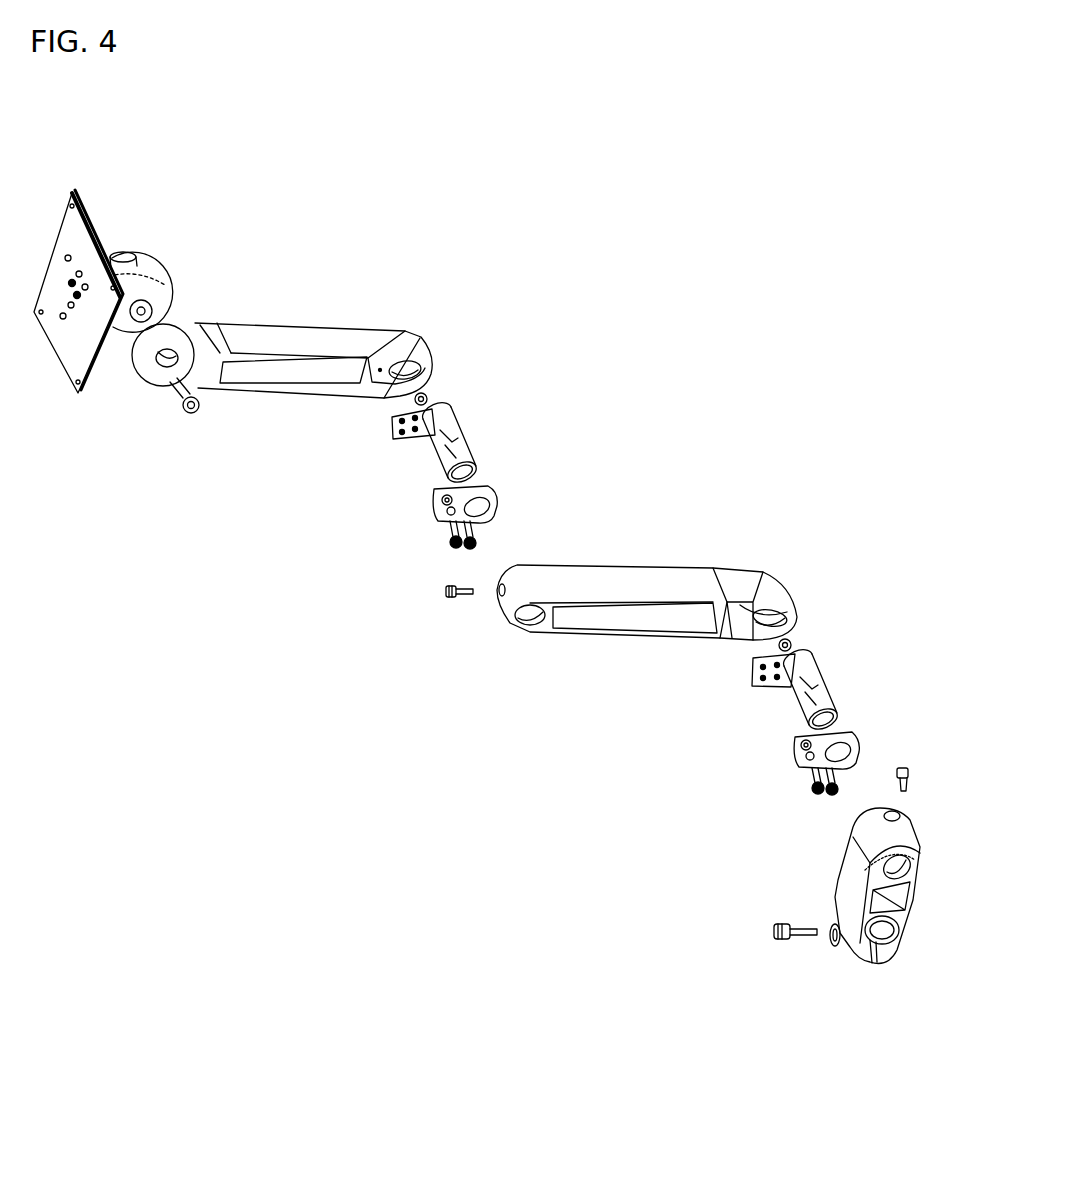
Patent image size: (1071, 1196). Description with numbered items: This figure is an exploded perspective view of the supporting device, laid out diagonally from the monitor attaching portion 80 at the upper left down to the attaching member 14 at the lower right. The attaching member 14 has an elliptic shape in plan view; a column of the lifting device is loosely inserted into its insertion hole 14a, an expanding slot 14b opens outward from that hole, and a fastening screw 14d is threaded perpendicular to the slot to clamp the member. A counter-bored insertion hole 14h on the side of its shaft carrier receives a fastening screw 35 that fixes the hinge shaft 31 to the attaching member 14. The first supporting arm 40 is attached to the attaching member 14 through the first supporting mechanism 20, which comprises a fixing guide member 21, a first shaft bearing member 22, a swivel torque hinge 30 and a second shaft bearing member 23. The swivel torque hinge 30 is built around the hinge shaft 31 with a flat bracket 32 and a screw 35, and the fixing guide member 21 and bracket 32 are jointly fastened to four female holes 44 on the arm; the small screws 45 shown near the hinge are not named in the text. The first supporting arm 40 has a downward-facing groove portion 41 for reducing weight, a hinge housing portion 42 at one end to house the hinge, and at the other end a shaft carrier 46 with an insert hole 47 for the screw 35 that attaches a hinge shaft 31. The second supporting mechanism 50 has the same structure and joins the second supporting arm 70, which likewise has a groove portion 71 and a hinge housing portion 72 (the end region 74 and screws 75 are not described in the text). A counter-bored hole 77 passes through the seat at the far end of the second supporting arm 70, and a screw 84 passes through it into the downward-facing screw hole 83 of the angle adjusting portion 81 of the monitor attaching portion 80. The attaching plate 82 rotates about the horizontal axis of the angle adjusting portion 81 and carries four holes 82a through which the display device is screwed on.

The attaching member 14 is at (830, 862).
The insertion hole 14a is at (888, 933).
The expanding slot 14b is at (873, 963).
The fastening screw 14d is at (775, 938).
The insertion hole 14h is at (898, 818).
The first supporting mechanism 20 is at (903, 658).
The fixing guide member 21 is at (489, 494).
The first shaft bearing member 22 is at (478, 467).
The second shaft bearing member 23 is at (430, 398).
The swivel torque hinge 30 is at (408, 457).
The hinge shaft 31 is at (457, 427).
The bracket 32 is at (392, 437).
The screw 35 is at (447, 594).
The first supporting arm 40 is at (562, 565).
The groove portion 41 is at (588, 618).
The hinge housing portion 42 is at (782, 620).
The female holes 44 is at (727, 640).
The clamp screws 45 is at (840, 775).
The shaft carrier 46 is at (538, 636).
The insert hole 47 is at (500, 598).
The second supporting mechanism 50 is at (572, 398).
The second supporting arm 70 is at (323, 337).
The groove portion 71 is at (297, 370).
The hinge housing portion 72 is at (412, 372).
The upper arm end cap 74 is at (384, 366).
The clamp screws 75 is at (450, 533).
The hole 77 is at (163, 368).
The monitor attaching portion 80 is at (238, 231).
The angle adjusting portion 81 is at (142, 288).
The attaching plate 82 is at (75, 360).
The holes 82a is at (88, 210).
The screw hole 83 is at (152, 310).
The screw 84 is at (182, 410).